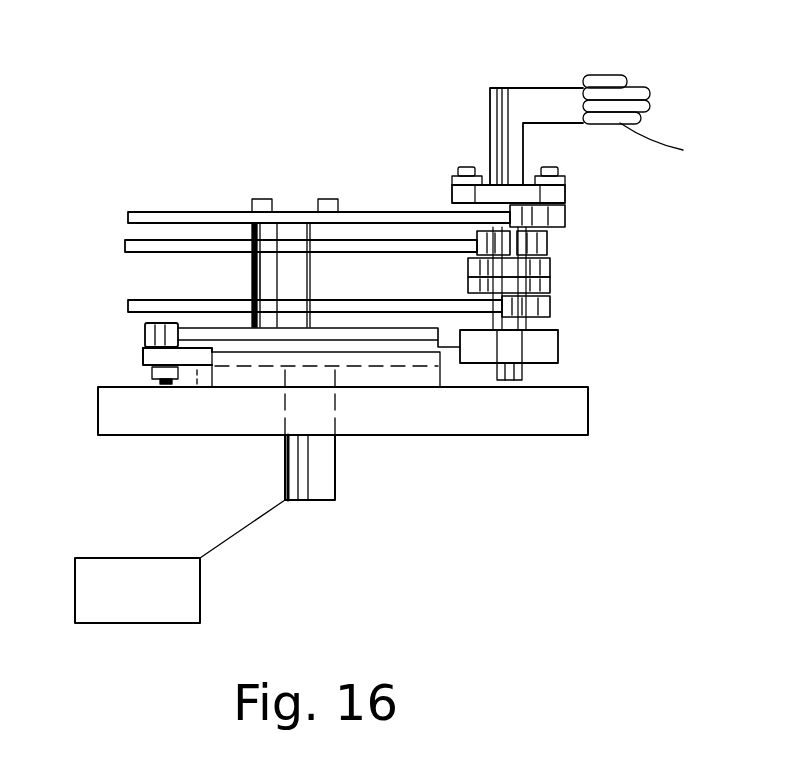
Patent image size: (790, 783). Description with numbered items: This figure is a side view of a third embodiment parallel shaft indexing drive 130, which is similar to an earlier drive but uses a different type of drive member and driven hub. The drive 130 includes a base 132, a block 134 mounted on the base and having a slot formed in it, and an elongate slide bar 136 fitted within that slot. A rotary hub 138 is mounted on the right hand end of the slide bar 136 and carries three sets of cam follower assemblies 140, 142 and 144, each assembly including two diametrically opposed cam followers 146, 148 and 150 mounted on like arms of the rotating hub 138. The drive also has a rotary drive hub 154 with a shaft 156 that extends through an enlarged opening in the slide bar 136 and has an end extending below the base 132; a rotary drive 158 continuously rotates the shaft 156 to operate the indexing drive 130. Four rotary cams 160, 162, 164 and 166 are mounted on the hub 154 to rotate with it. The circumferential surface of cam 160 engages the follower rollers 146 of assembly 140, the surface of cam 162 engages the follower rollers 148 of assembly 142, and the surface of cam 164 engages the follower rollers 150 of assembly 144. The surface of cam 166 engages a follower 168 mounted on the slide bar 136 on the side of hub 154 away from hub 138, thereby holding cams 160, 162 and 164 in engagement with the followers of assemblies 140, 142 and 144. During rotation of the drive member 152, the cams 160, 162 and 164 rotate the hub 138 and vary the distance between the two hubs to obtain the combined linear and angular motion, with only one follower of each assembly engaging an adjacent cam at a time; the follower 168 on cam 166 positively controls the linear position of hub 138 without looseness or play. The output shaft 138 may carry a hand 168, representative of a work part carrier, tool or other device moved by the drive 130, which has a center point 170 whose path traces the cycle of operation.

The parallel shaft indexing drive 130 is at (96, 90).
The base 132 is at (588, 413).
The block 134 is at (393, 377).
The slide bar 136 is at (143, 357).
The rotary hub 138 is at (490, 97).
The cam follower assembly 140 is at (580, 192).
The cam follower assembly 142 is at (572, 265).
The cam follower assembly 144 is at (572, 290).
The cam follower 146 is at (566, 216).
The cam follower 148 is at (548, 252).
The cam follower 150 is at (548, 313).
The drive member 152 is at (300, 196).
The rotary drive hub 154 is at (250, 283).
The shaft 156 is at (335, 500).
The rotary drive 158 is at (115, 623).
The rotary cam 160 is at (127, 213).
The rotary cam 162 is at (125, 247).
The rotary cam 164 is at (127, 306).
The rotary cam 166 is at (197, 372).
The follower 168 is at (143, 333).
The center point 170 is at (673, 144).